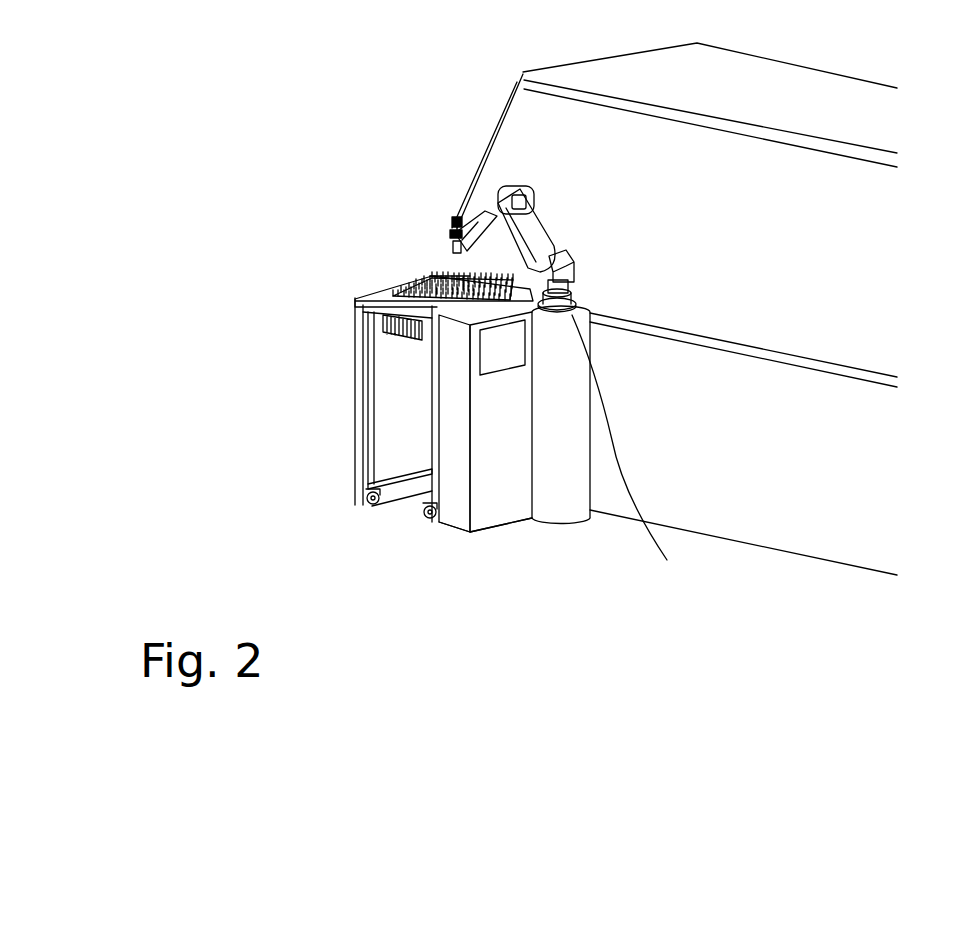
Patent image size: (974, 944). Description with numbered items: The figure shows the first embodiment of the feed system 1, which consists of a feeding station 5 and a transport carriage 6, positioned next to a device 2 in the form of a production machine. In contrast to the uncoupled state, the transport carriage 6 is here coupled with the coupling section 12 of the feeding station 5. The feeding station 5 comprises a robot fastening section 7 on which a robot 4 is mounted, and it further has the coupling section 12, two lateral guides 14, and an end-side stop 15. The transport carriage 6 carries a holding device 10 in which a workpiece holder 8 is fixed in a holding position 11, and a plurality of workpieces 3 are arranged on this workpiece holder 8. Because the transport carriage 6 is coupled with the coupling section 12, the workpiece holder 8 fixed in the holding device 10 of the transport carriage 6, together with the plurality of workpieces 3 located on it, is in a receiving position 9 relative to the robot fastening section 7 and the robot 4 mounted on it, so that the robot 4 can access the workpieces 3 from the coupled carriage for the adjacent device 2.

The feed system 1 is at (290, 208).
The device 2 is at (876, 238).
The workpieces 3 is at (426, 279).
The robot 4 is at (527, 183).
The feeding station 5 is at (490, 437).
The transport carriage 6 is at (355, 507).
The robot fastening section 7 is at (629, 452).
The workpiece holder 8 is at (387, 338).
The receiving position 9 is at (423, 268).
The holding device 10 is at (382, 296).
The holding position 11 is at (368, 322).
The coupling section 12 is at (411, 524).
The lateral guides 14 is at (353, 457).
The end-side stop 15 is at (518, 290).